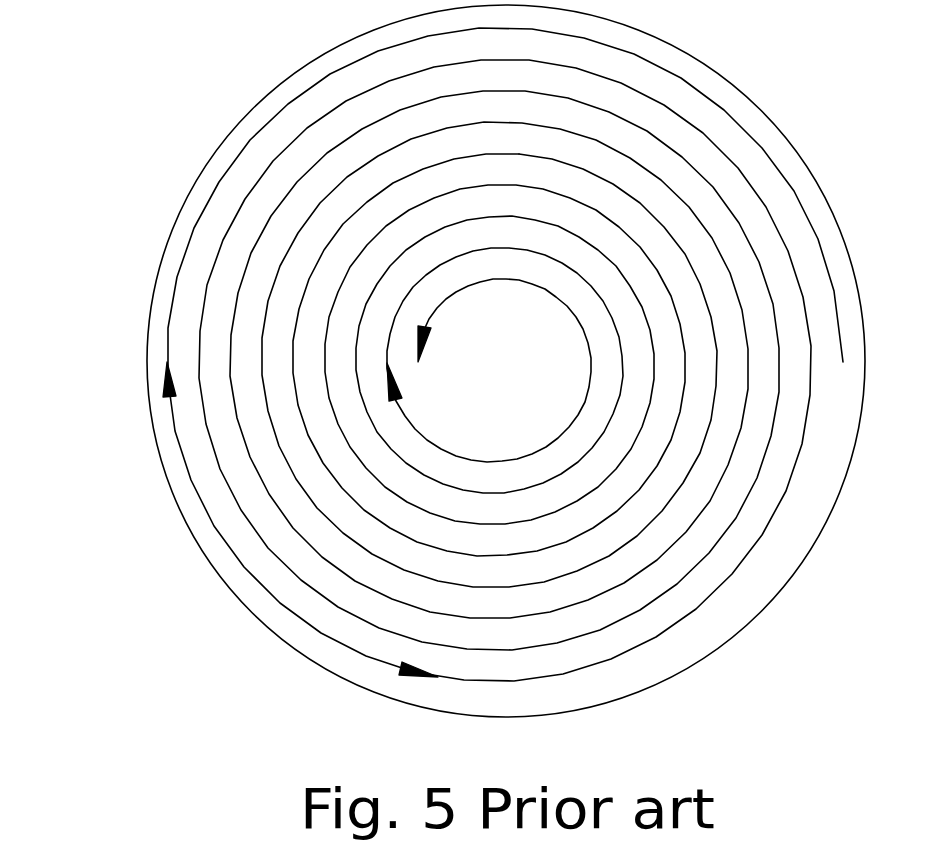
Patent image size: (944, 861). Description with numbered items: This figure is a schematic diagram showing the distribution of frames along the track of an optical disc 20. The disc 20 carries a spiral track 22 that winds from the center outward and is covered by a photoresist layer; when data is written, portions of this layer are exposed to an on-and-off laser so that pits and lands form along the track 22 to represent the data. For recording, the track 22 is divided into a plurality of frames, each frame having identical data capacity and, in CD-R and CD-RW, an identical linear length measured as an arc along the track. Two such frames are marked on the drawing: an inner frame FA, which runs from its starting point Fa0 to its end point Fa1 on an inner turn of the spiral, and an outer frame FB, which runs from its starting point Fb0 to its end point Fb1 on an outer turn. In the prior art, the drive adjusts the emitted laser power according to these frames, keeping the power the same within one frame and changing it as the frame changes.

The optical disc 20 is at (305, 63).
The spiral track 22 is at (480, 354).
The inner frame FA is at (485, 463).
The outer frame FB is at (250, 568).
The start point of inner frame Fa0 is at (469, 343).
The end point of inner frame Fa1 is at (432, 392).
The start point of outer frame Fb0 is at (437, 680).
The end point of outer frame Fb1 is at (168, 360).